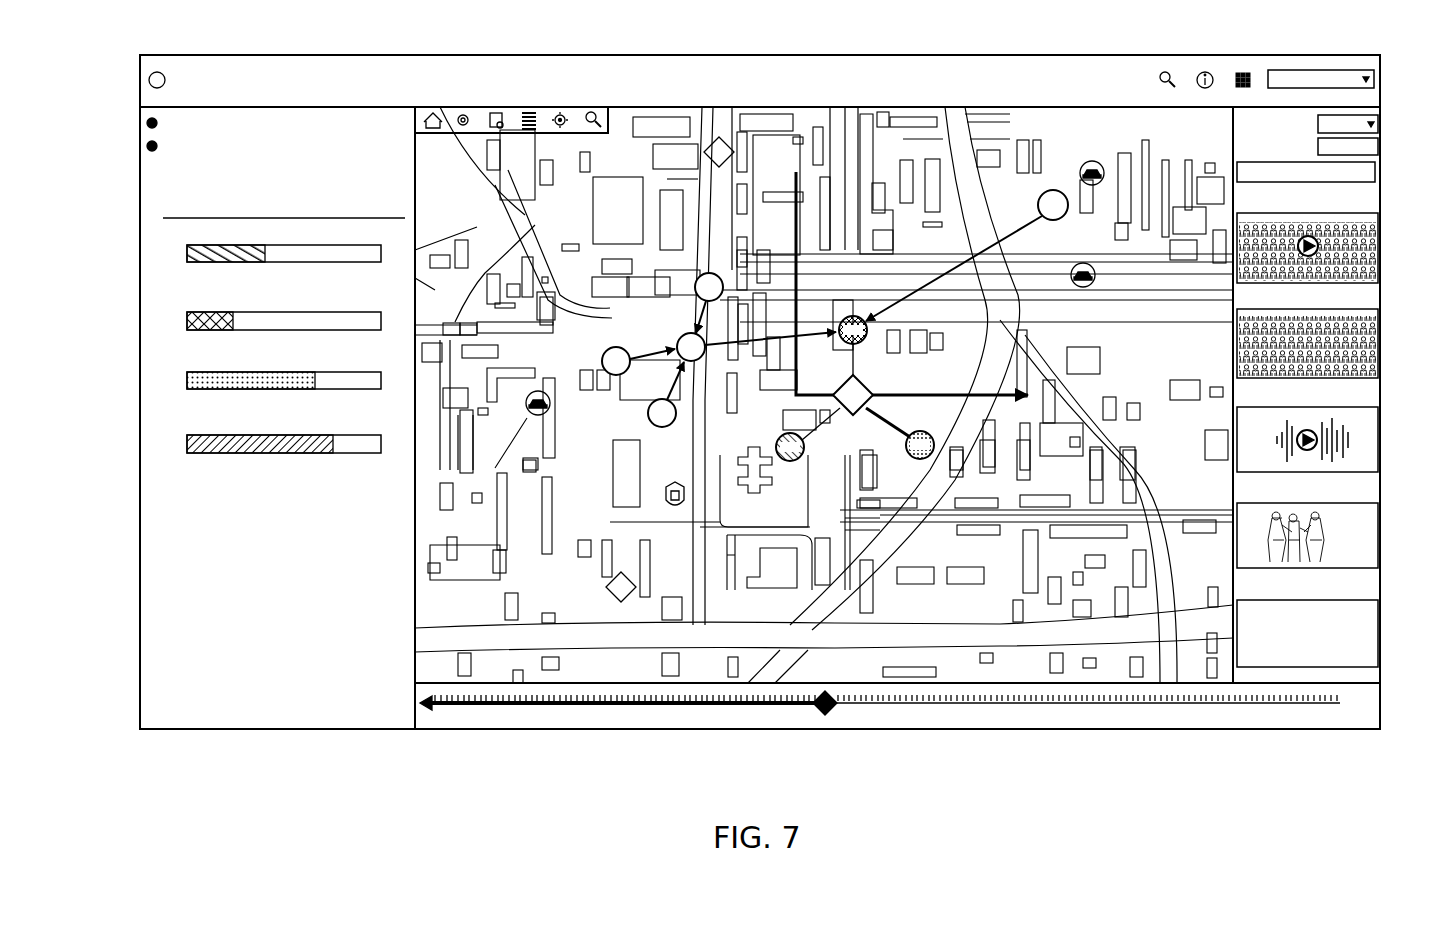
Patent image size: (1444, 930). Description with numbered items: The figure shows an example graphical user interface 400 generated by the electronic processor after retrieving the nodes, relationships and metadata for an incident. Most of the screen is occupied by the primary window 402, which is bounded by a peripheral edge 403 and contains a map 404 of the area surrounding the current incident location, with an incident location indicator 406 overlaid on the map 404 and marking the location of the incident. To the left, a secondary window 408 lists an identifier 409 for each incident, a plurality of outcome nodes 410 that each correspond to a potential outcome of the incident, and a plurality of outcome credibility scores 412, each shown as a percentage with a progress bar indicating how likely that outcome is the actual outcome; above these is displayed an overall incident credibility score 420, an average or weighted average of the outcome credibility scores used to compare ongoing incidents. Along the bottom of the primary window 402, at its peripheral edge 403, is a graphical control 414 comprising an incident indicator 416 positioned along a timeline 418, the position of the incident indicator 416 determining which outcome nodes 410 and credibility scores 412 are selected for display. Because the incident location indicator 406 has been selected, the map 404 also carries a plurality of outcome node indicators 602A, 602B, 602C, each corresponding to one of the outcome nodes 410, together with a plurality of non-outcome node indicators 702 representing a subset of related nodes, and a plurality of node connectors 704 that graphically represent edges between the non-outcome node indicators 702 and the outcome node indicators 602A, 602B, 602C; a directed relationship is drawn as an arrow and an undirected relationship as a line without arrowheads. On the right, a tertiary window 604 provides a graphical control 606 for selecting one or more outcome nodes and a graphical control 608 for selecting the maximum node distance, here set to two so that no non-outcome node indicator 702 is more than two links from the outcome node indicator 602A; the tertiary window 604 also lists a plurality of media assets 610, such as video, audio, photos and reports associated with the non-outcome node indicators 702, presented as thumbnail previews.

The graphical user interface 400 is at (150, 42).
The primary window 402 is at (760, 54).
The peripheral edge 403 is at (560, 728).
The map 404 is at (1105, 172).
The incident location indicator 406 is at (868, 392).
The secondary window 408 is at (140, 534).
The identifier 409 is at (147, 123).
The outcome node 410 is at (182, 292).
The outcome credibility score 412 is at (182, 321).
The graphical control 414 is at (715, 712).
The incident indicator 416 is at (820, 715).
The timeline 418 is at (985, 710).
The overall incident credibility score 420 is at (168, 236).
The outcome node indicator 602A is at (853, 315).
The outcome node indicator 602B is at (906, 445).
The outcome node indicator 602C is at (776, 447).
The tertiary window 604 is at (1382, 537).
The graphical control 606 is at (1380, 125).
The graphical control 608 is at (1380, 147).
The media asset 610 is at (1378, 325).
The non-outcome node indicator 702 is at (696, 280).
The node connector 704 is at (630, 358).